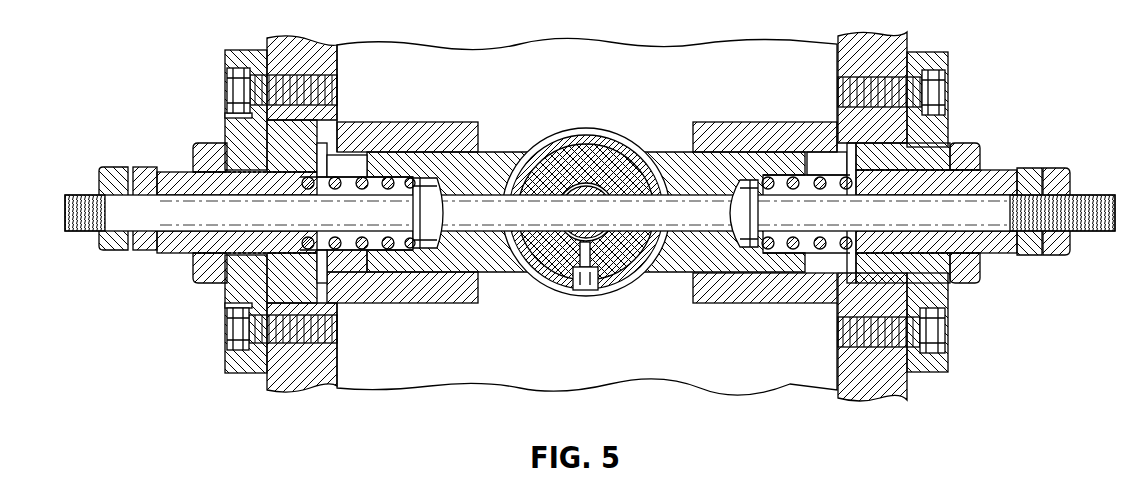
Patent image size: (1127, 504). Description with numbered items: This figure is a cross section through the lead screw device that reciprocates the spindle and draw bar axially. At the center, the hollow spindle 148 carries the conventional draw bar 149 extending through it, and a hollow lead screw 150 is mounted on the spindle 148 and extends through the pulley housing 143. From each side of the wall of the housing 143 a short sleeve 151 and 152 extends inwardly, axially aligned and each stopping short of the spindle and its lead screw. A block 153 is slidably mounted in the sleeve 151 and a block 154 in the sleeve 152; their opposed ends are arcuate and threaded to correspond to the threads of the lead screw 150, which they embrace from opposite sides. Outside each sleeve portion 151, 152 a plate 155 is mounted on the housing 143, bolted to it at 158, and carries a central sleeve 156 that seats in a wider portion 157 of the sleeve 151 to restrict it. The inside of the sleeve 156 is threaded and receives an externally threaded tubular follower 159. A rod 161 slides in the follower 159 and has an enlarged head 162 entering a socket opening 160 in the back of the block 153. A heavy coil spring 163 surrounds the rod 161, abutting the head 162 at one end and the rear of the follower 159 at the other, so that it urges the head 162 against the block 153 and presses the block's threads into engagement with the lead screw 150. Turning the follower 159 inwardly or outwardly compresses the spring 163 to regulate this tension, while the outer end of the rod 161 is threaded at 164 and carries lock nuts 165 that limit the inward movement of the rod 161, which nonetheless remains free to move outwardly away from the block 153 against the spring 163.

The pulley housing 143 is at (870, 382).
The spindle 148 is at (620, 160).
The draw bar 149 is at (585, 195).
The lead screw 150 is at (640, 280).
The short sleeve 151 is at (407, 290).
The short sleeve 152 is at (780, 305).
The block 153 is at (490, 262).
The block 154 is at (700, 165).
The plate 155 is at (224, 322).
The central sleeve 156 is at (224, 297).
The wider portion 157 is at (338, 133).
The bolt 158 is at (240, 355).
The tubular follower 159 is at (183, 252).
The socket opening 160 is at (420, 180).
The rod 161 is at (190, 210).
The enlarged head 162 is at (478, 150).
The coil spring 163 is at (350, 250).
The threaded outer end 164 is at (90, 235).
The lock nuts 165 is at (125, 252).